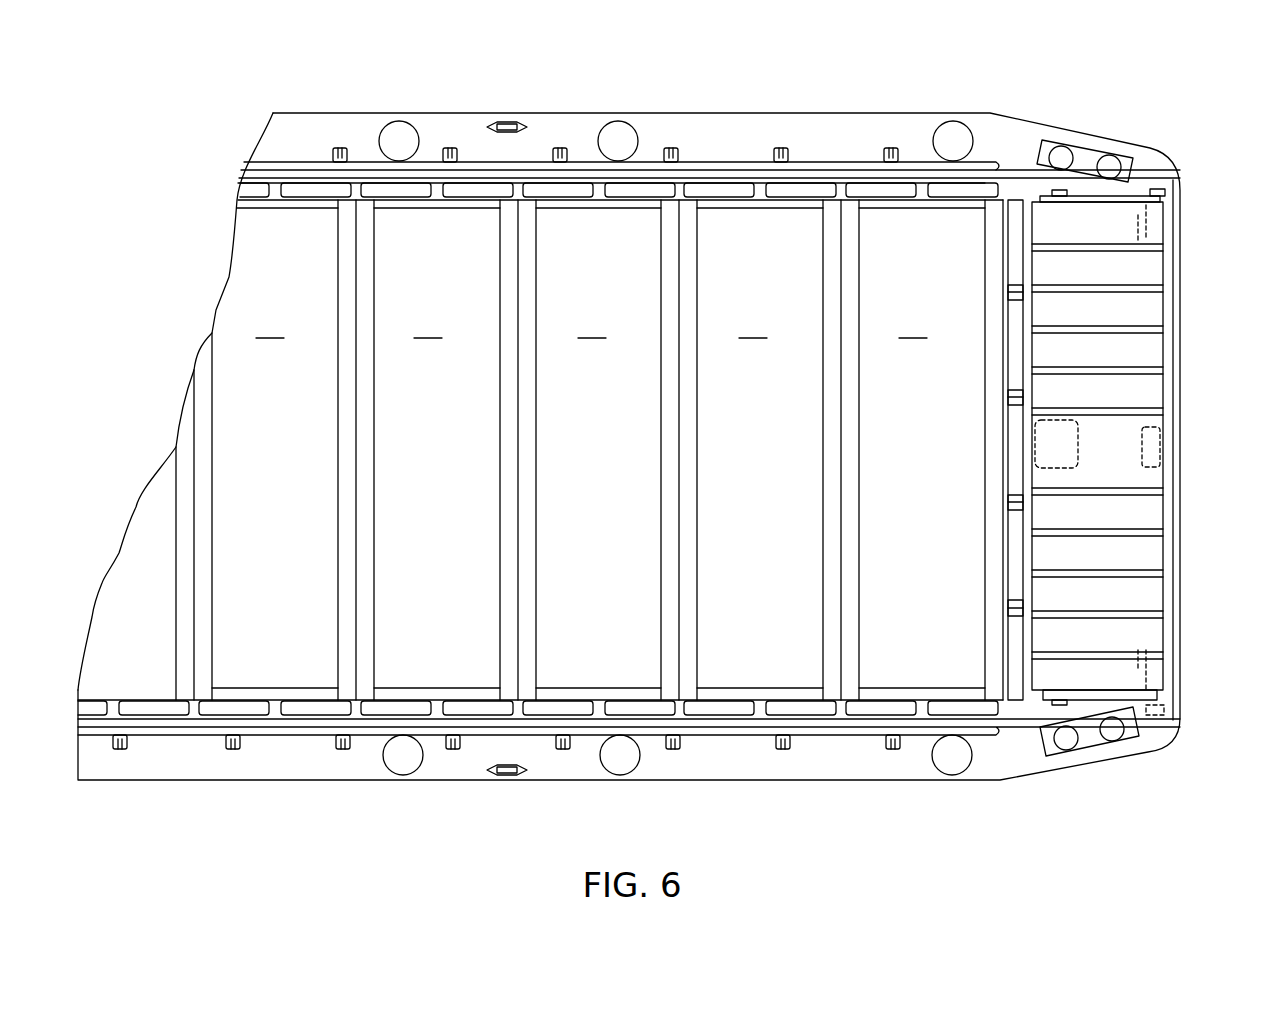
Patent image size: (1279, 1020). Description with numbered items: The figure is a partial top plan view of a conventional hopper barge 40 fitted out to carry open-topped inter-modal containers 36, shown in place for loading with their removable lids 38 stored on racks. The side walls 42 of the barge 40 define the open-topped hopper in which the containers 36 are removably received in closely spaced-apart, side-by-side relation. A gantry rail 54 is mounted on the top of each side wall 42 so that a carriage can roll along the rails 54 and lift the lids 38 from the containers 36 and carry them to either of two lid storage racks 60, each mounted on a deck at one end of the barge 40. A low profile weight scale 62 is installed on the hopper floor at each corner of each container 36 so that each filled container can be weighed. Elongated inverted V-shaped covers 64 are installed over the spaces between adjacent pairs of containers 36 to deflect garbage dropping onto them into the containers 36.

The hopper barge 40 is at (212, 136).
The open-topped inter-modal container 36 is at (598, 448).
The removable lid 38 is at (1145, 302).
The side wall 42 is at (752, 732).
The rail 54 is at (718, 168).
The lid storage rack 60 is at (1067, 195).
The low profile weight scale 62 is at (312, 706).
The inverted V-shaped cover 64 is at (200, 684).